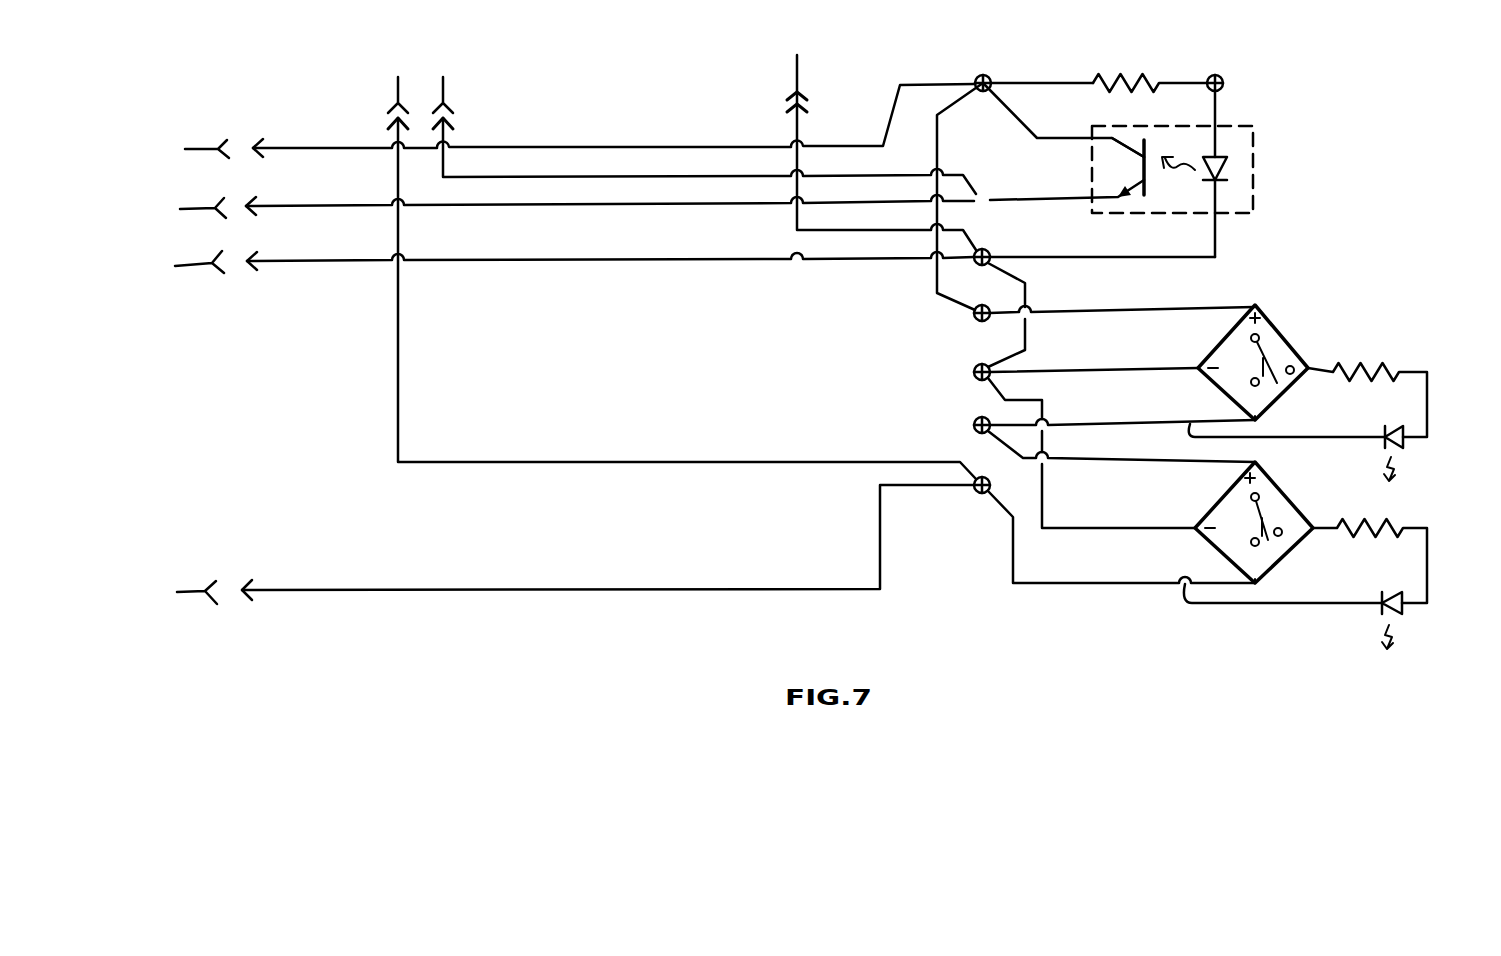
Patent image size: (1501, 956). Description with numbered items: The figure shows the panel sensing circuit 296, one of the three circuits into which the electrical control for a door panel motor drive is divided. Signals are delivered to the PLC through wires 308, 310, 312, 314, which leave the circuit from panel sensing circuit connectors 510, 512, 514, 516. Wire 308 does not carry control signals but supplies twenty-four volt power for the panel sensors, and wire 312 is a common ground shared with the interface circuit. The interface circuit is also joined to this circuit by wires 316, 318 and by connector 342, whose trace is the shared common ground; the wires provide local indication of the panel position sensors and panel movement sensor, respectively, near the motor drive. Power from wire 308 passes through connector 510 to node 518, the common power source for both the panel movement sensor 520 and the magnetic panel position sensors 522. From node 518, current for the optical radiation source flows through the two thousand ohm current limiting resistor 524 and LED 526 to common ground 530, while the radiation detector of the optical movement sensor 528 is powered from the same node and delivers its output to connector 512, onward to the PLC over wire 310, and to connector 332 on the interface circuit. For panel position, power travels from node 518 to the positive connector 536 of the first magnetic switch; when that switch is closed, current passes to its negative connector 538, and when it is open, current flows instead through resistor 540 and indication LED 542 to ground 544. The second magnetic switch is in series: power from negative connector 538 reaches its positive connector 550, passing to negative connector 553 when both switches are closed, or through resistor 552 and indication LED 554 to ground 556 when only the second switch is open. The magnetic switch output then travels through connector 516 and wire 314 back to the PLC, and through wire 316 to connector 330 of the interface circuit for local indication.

The panel sensing circuit 296 is at (514, 724).
The wire 308 is at (193, 149).
The wire 310 is at (190, 209).
The wire 312 is at (185, 266).
The wire 314 is at (187, 593).
The wire 316 is at (398, 93).
The wire 318 is at (443, 92).
The connector 330 is at (376, 124).
The connector 332 is at (458, 114).
The connector 342 is at (790, 116).
The panel sensing circuit connector 510 is at (238, 143).
The connector 512 is at (236, 205).
The panel sensing circuit connector 514 is at (232, 258).
The connector 516 is at (230, 590).
The node 518 is at (983, 75).
The panel movement sensor 520 is at (1168, 133).
The panel position sensors 522 is at (1232, 446).
The current limiting resistor 524 is at (1122, 73).
The LED 526 is at (1232, 160).
The optical movement sensor 528 is at (1155, 150).
The common ground 530 is at (988, 252).
The positive connector 536 is at (1257, 298).
The negative connector 538 is at (1260, 418).
The resistor 540 is at (1363, 360).
The indication LED 542 is at (1403, 443).
The ground 544 is at (1198, 366).
The positive connector 550 is at (1250, 462).
The resistor 552 is at (1367, 510).
The negative connector 553 is at (1260, 582).
The indication LED 554 is at (1405, 612).
The ground 556 is at (1193, 530).